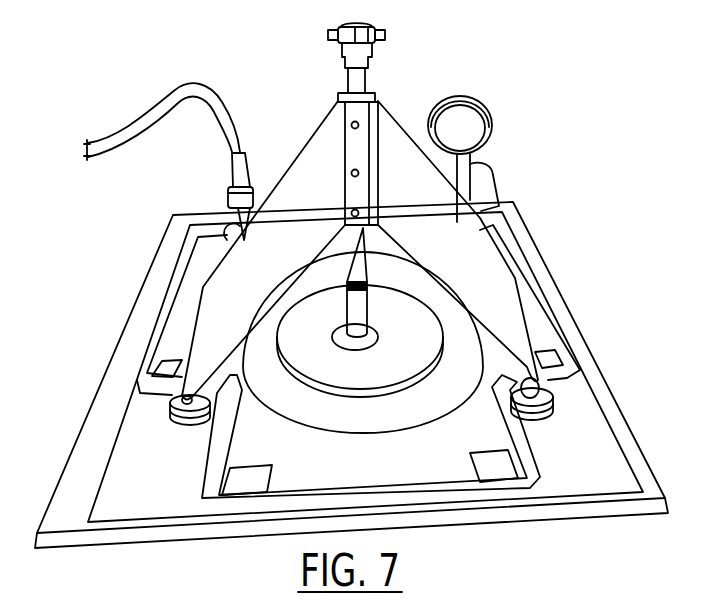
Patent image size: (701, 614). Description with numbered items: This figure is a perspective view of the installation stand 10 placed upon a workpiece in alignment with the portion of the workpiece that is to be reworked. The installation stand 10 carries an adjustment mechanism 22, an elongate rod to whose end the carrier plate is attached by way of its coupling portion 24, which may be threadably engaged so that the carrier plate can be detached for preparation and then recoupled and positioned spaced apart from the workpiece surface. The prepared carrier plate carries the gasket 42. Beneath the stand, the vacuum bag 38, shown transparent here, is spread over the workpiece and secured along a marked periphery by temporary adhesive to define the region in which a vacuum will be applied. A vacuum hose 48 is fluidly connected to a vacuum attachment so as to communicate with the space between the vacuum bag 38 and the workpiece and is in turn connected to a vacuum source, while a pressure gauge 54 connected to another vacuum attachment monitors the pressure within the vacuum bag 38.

The installation stand 10 is at (402, 78).
The adjustment mechanism 22 is at (358, 270).
The coupling portion 24 is at (360, 305).
The vacuum bag 38 is at (387, 474).
The gasket 42 is at (302, 402).
The vacuum hose 48 is at (208, 88).
The pressure gauge 54 is at (468, 132).